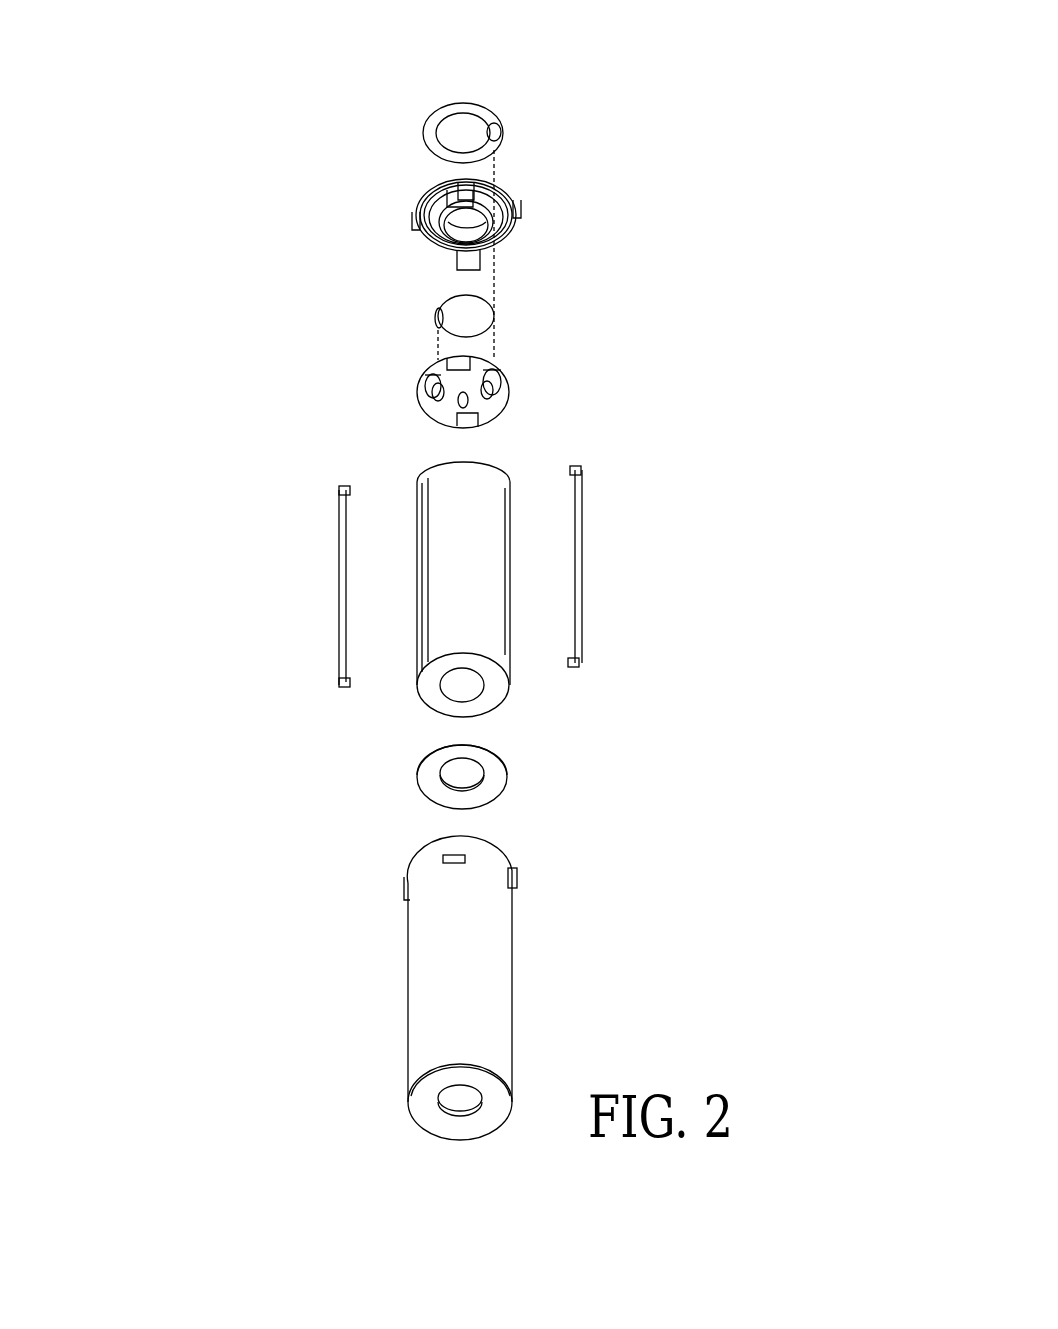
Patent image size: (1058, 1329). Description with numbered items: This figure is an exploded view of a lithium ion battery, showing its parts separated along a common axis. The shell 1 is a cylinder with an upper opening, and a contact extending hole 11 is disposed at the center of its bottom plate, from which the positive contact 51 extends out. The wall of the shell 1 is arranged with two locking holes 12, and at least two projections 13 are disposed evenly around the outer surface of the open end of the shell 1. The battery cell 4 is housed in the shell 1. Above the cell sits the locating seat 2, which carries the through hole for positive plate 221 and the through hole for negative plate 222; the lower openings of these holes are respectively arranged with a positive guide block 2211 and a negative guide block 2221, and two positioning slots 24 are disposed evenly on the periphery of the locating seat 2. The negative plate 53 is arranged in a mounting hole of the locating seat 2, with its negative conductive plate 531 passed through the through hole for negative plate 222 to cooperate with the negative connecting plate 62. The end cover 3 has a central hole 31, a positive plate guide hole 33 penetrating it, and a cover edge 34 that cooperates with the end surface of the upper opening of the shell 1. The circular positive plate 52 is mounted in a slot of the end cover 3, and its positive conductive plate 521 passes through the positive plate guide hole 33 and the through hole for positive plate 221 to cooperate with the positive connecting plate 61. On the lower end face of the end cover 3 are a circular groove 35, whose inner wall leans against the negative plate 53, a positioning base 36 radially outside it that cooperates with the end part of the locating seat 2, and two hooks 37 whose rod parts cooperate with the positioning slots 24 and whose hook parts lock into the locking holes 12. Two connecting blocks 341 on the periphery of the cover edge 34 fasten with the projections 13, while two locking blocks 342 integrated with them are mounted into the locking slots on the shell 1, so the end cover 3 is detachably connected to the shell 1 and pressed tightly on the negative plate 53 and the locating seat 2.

The shell 1 is at (472, 1012).
The contact extending hole 11 is at (442, 1102).
The locking hole 12 is at (433, 852).
The projection 13 is at (518, 885).
The locating seat 2 is at (443, 415).
The through hole for positive plate 221 is at (502, 373).
The through hole for negative plate 222 is at (417, 378).
The positive guide block 2211 is at (512, 395).
The negative guide block 2221 is at (420, 398).
The positioning slot 24 is at (467, 423).
The end cover 3 is at (457, 202).
The central hole 31 is at (530, 180).
The positive plate guide hole 33 is at (517, 213).
The cover edge 34 is at (493, 183).
The connecting block 341 is at (410, 222).
The locking block 342 is at (413, 228).
The circular groove 35 is at (512, 238).
The positioning base 36 is at (420, 190).
The hook 37 is at (457, 268).
The battery cell 4 is at (452, 472).
The positive contact 51 is at (490, 803).
The positive plate 52 is at (428, 99).
The positive conductive plate 521 is at (497, 133).
The negative plate 53 is at (493, 317).
The negative conductive plate 531 is at (435, 315).
The positive connecting plate 61 is at (583, 590).
The negative connecting plate 62 is at (323, 576).